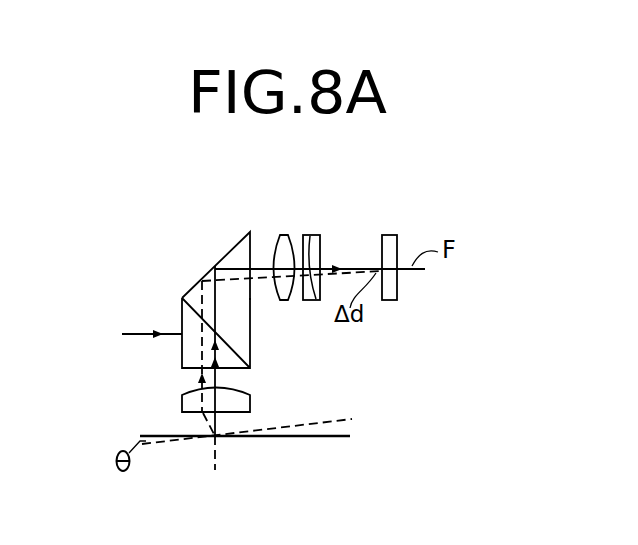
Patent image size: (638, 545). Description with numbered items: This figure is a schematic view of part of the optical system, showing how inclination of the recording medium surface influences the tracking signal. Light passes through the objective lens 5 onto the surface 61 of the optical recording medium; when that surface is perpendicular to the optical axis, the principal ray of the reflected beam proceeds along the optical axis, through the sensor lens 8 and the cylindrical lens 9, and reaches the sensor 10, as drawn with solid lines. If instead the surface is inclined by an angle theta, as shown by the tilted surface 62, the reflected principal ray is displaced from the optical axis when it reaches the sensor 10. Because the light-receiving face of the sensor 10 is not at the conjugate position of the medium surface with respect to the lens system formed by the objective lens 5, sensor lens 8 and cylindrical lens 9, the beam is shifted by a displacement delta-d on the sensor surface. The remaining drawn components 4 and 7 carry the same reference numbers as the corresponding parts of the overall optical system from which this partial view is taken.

The beam splitter 4 is at (250, 352).
The objective lens 5 is at (250, 398).
The surface of the optical recording medium 61 is at (350, 437).
The inclined surface of the optical recording medium 62 is at (350, 421).
The prism 7 is at (243, 238).
The sensor lens 8 is at (285, 234).
The cylindrical lens 9 is at (315, 235).
The sensor 10 is at (386, 235).